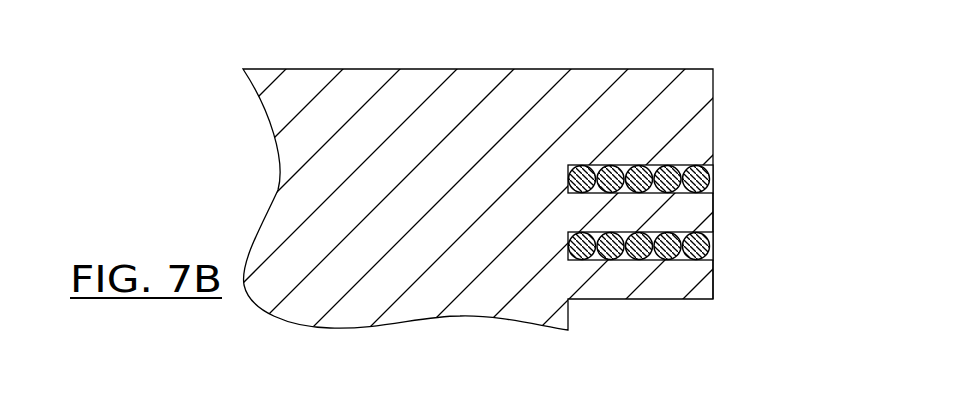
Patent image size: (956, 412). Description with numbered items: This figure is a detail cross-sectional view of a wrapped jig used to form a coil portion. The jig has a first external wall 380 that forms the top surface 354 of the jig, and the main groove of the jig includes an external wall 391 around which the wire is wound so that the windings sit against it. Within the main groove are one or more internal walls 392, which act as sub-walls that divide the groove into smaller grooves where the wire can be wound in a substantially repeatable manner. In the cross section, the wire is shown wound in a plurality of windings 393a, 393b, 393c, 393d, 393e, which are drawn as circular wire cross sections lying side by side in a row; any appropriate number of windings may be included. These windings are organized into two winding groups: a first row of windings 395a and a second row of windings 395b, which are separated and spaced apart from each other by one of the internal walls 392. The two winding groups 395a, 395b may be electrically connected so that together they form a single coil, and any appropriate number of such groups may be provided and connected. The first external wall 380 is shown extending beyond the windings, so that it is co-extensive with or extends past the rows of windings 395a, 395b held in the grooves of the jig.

The top surface 354 is at (403, 69).
The first external wall 380 is at (688, 97).
The external wall 391 is at (588, 167).
The internal walls 392 is at (710, 266).
The winding 393a is at (580, 258).
The winding 393b is at (608, 258).
The winding 393c is at (638, 258).
The winding 393d is at (668, 258).
The winding 393e is at (693, 258).
The first row of windings 395a is at (568, 180).
The second row of windings 395b is at (568, 249).